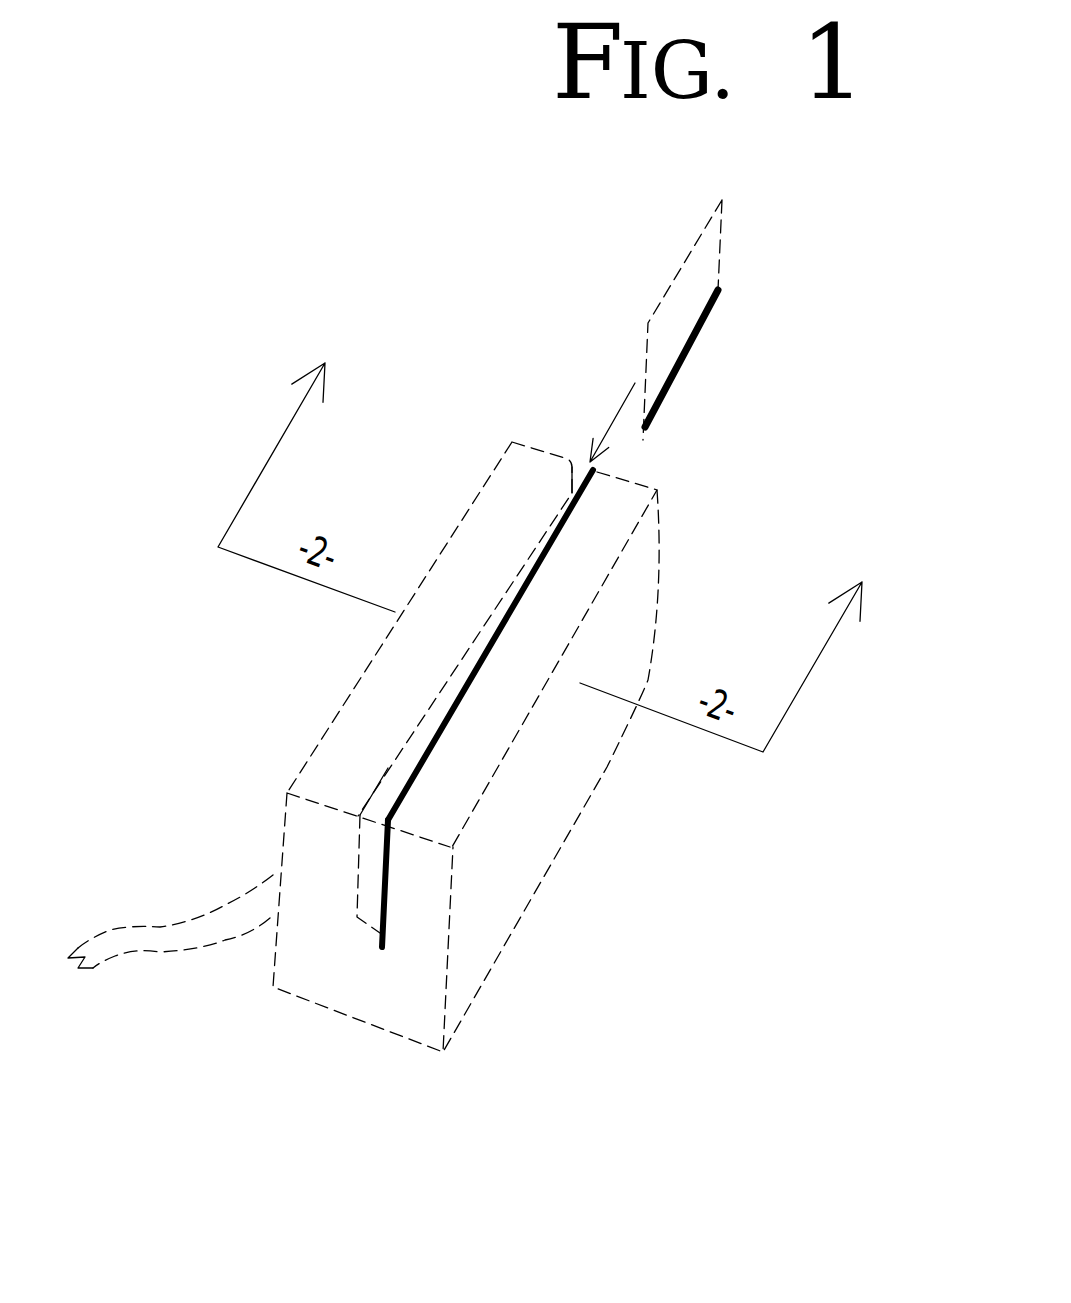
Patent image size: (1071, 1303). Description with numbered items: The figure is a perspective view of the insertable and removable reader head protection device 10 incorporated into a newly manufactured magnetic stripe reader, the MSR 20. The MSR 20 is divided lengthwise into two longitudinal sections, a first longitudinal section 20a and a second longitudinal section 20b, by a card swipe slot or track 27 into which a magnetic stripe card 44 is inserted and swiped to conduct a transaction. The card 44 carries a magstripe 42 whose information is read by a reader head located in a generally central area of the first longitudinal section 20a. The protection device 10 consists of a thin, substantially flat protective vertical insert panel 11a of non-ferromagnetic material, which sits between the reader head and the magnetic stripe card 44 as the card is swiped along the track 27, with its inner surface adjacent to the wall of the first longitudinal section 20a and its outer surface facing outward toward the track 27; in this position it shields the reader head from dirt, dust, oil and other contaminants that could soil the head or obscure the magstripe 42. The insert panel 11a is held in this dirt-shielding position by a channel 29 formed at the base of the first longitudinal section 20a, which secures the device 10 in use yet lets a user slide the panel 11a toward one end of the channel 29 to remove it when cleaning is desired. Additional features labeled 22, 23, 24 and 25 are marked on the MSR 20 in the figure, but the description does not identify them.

The insertable and removable reader head protection device 10 is at (530, 538).
The protective vertical insert panel 11a is at (383, 870).
The MSR 20 is at (307, 1051).
The first longitudinal section 20a is at (697, 579).
The second longitudinal section 20b is at (457, 413).
The top surface 22 is at (486, 708).
The side surface 23 is at (498, 836).
The end surface 24 is at (317, 991).
The slot 25 is at (635, 482).
The card swipe slot or track 27 is at (372, 830).
The channel 29 is at (382, 948).
The magstripe 42 is at (717, 303).
The magnetic stripe card 44 is at (677, 287).